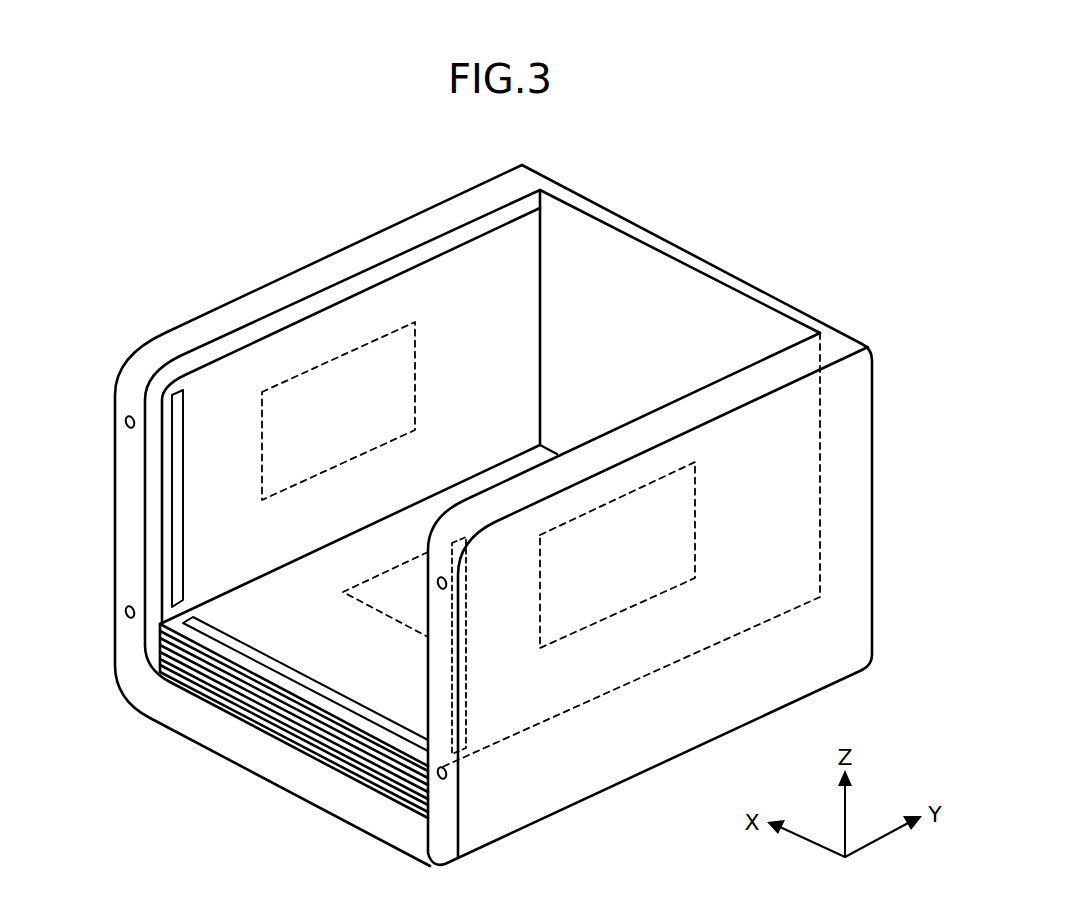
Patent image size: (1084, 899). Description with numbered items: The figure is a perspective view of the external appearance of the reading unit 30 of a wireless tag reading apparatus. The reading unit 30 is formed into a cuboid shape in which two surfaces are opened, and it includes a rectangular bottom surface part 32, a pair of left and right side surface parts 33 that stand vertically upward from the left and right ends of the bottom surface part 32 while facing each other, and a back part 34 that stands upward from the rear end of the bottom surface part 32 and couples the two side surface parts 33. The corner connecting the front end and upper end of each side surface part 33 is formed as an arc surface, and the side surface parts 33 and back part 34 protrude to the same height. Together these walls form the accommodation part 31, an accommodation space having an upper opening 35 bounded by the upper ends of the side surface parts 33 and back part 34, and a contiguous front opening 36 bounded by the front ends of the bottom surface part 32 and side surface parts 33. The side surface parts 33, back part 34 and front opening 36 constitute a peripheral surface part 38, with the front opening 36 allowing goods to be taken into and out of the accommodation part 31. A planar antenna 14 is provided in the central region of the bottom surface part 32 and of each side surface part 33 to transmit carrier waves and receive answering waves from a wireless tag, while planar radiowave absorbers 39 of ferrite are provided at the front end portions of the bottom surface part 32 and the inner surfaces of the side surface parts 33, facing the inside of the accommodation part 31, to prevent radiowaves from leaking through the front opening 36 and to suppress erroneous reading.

The planar antenna 14 is at (262, 489).
The reading unit 30 is at (672, 205).
The accommodation part 31 is at (637, 350).
The bottom surface part 32 is at (240, 666).
The side surface part 33 is at (318, 258).
The back part 34 is at (597, 253).
The upper opening 35 is at (288, 353).
The front opening 36 is at (380, 657).
The peripheral surface part 38 is at (883, 451).
The radiowave absorber 39 is at (178, 502).